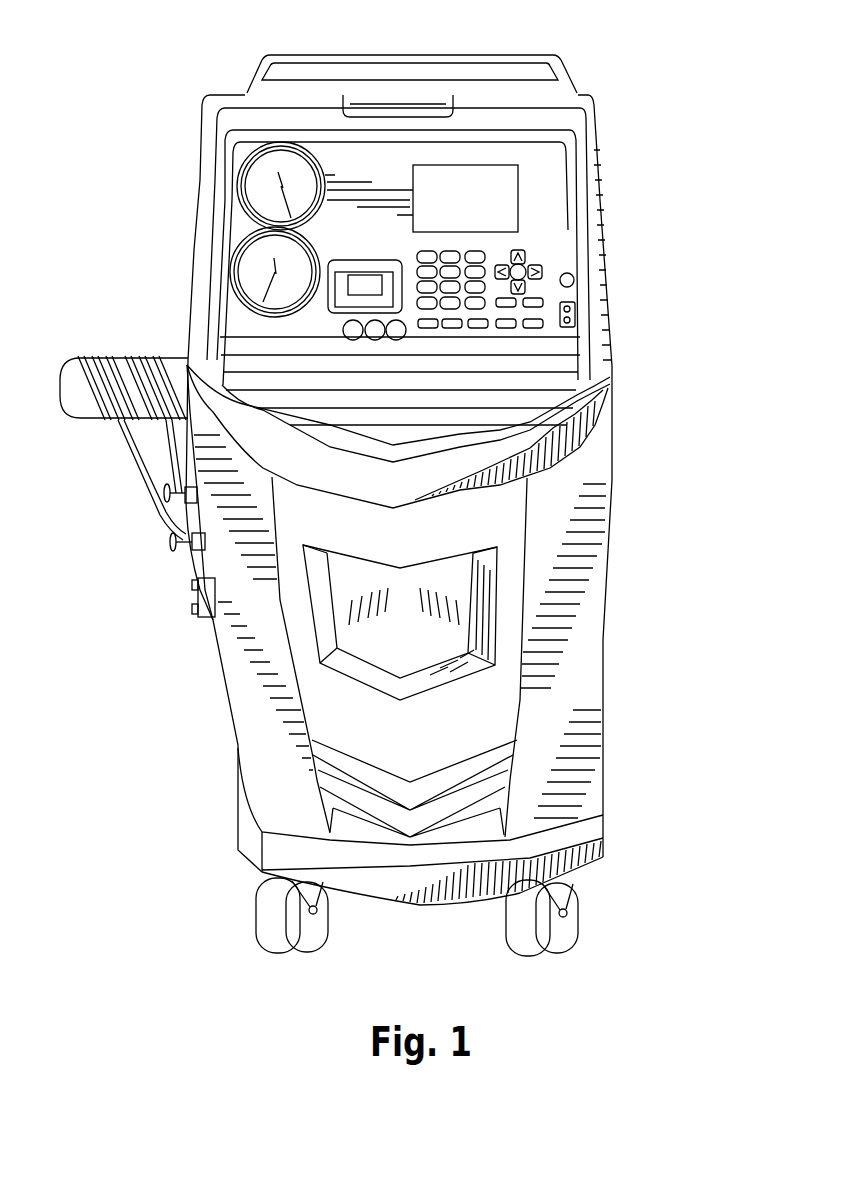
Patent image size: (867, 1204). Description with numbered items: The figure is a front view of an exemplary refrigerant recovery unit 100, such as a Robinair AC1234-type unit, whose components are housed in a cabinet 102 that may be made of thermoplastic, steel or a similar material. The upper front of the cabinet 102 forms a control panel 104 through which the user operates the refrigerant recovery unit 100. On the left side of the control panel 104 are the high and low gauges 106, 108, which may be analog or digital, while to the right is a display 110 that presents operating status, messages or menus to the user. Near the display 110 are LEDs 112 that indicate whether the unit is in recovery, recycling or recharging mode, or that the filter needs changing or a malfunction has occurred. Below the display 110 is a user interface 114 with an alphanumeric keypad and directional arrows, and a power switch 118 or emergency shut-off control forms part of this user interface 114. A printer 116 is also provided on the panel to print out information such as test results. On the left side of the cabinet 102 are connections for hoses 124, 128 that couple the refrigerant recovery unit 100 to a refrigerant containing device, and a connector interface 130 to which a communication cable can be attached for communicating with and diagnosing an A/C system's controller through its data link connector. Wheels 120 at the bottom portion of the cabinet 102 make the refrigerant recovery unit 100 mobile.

The refrigerant recovery unit 100 is at (707, 610).
The cabinet 102 is at (612, 487).
The control panel 104 is at (427, 309).
The high gauge 106 is at (253, 187).
The low gauge 108 is at (258, 262).
The display 110 is at (518, 193).
The LEDs 112 is at (383, 100).
The user interface 114 is at (453, 308).
The printer 116 is at (327, 303).
The power switch 118 is at (574, 306).
The wheels 120 is at (574, 902).
The hose 124 is at (160, 487).
The hose 128 is at (165, 537).
The connector interface 130 is at (193, 593).